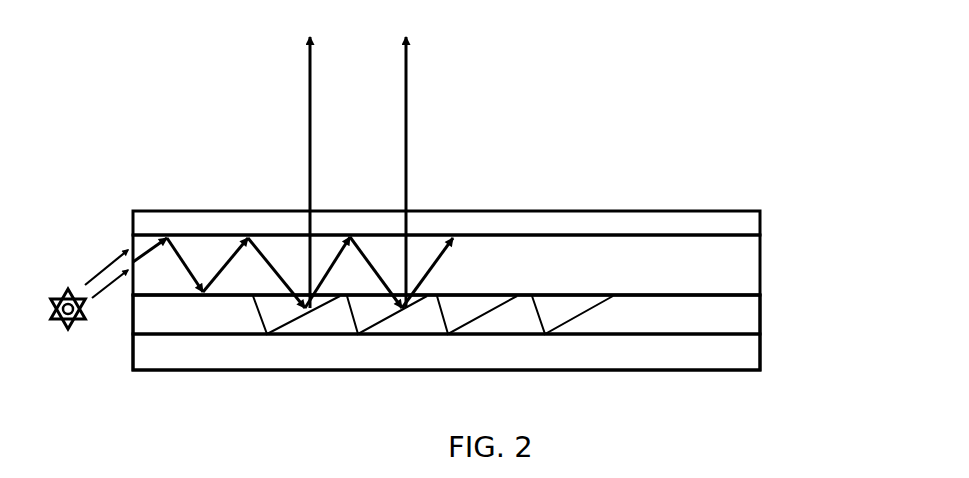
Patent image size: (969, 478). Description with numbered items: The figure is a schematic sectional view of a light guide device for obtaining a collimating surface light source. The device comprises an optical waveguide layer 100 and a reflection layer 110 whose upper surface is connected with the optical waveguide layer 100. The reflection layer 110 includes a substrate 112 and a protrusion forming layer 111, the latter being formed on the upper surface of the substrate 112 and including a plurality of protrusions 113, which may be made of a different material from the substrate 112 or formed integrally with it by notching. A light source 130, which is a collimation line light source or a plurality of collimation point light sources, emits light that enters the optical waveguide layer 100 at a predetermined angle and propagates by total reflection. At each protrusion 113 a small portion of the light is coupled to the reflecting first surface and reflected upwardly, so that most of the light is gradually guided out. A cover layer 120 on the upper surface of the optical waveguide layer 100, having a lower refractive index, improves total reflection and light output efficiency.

The optical waveguide layer 100 is at (752, 272).
The reflection layer 110 is at (853, 297).
The protrusion forming layer 111 is at (752, 320).
The substrate 112 is at (752, 353).
The protrusions 113 is at (500, 325).
The cover layer 120 is at (752, 223).
The light source 130 is at (52, 292).